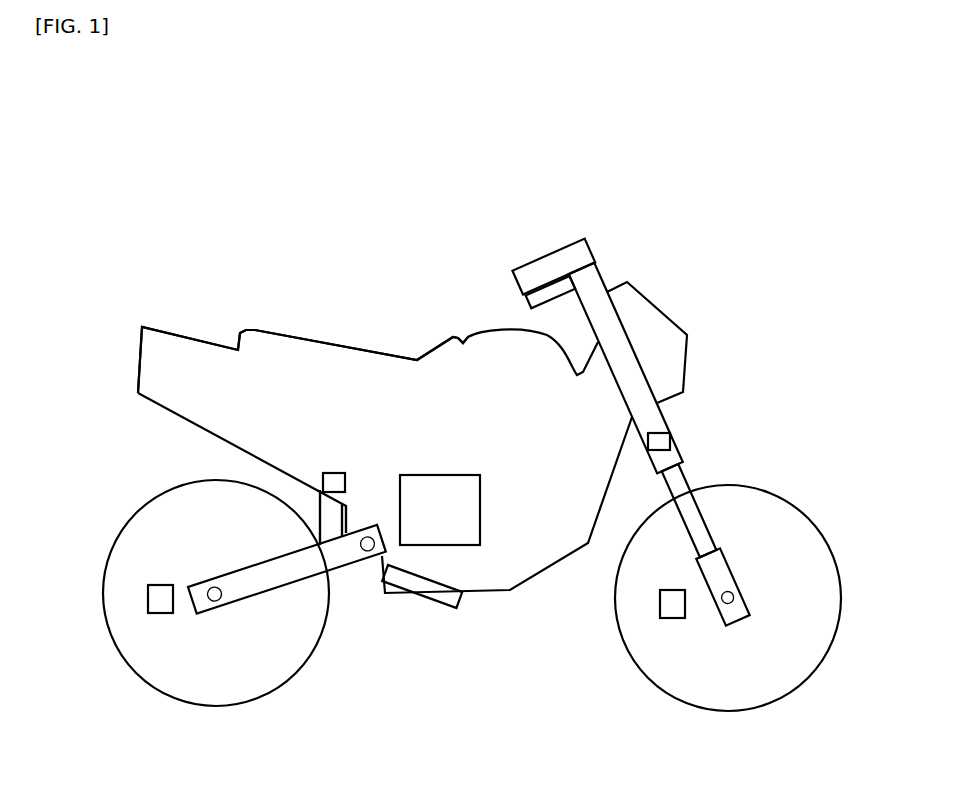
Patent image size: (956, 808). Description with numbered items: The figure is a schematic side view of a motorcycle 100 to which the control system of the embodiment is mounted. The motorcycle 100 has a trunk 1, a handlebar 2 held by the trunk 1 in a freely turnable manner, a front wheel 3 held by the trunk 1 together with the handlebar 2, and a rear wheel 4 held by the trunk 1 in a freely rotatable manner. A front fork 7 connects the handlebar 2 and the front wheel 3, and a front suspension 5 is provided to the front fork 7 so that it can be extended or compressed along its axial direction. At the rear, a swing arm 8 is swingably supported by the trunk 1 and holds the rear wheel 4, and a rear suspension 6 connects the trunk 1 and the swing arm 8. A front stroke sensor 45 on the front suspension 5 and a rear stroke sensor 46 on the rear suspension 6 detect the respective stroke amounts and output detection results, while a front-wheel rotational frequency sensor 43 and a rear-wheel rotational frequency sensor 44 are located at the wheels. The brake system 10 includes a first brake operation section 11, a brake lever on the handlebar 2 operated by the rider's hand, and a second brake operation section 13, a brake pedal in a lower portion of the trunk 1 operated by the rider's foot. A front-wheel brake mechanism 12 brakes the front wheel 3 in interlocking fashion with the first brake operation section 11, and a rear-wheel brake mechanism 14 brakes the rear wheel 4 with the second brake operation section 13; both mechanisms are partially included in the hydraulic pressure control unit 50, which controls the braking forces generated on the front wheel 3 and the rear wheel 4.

The motorcycle 100 is at (835, 106).
The trunk 1 is at (313, 365).
The handlebar 2 is at (548, 262).
The front wheel 3 is at (730, 712).
The rear wheel 4 is at (217, 708).
The front suspension 5 is at (690, 485).
The rear suspension 6 is at (335, 528).
The front fork 7 is at (682, 452).
The swing arm 8 is at (260, 583).
The brake system 10 is at (747, 397).
The first brake operation section 11 is at (528, 307).
The front-wheel brake mechanism 12 is at (743, 568).
The second brake operation section 13 is at (438, 592).
The rear-wheel brake mechanism 14 is at (198, 575).
The front-wheel rotational frequency sensor 43 is at (660, 603).
The rear-wheel rotational frequency sensor 44 is at (148, 598).
The front stroke sensor 45 is at (660, 430).
The rear stroke sensor 46 is at (330, 467).
The hydraulic pressure control unit 50 is at (424, 472).